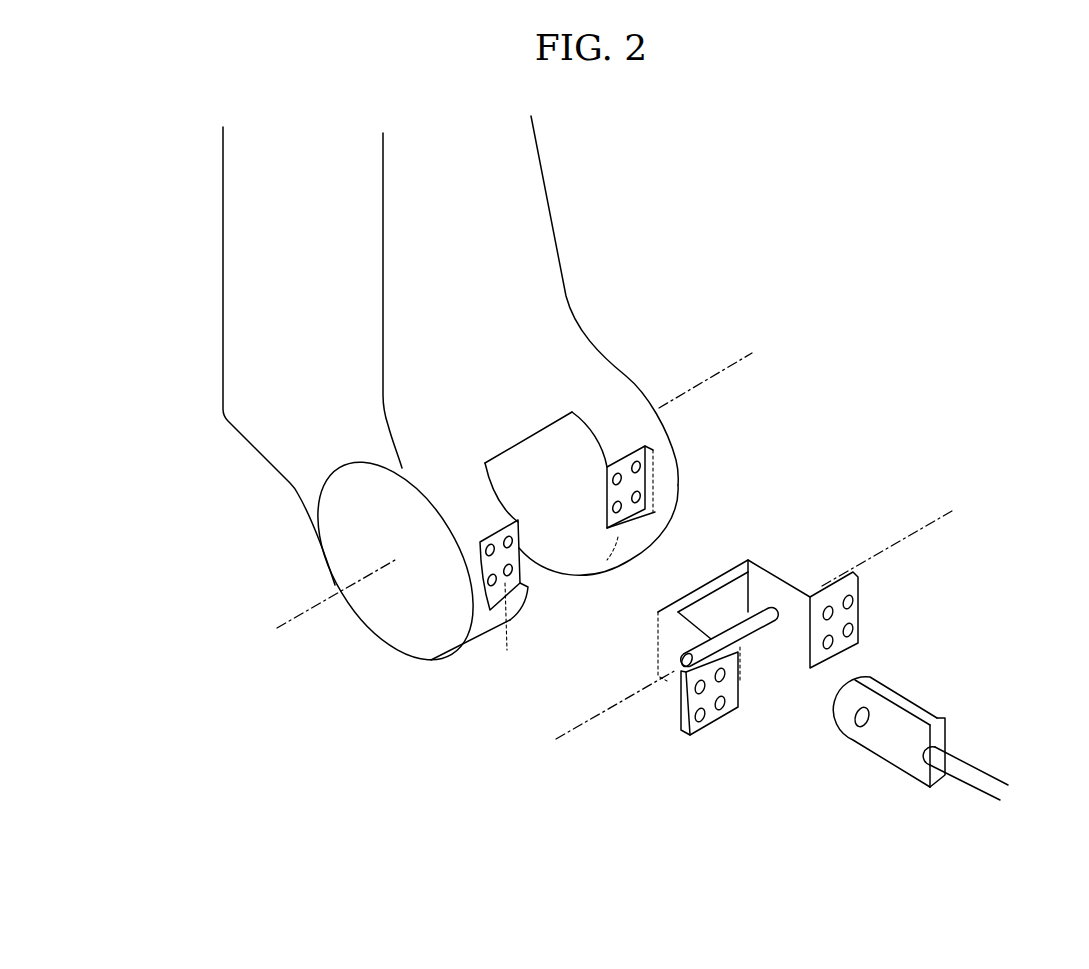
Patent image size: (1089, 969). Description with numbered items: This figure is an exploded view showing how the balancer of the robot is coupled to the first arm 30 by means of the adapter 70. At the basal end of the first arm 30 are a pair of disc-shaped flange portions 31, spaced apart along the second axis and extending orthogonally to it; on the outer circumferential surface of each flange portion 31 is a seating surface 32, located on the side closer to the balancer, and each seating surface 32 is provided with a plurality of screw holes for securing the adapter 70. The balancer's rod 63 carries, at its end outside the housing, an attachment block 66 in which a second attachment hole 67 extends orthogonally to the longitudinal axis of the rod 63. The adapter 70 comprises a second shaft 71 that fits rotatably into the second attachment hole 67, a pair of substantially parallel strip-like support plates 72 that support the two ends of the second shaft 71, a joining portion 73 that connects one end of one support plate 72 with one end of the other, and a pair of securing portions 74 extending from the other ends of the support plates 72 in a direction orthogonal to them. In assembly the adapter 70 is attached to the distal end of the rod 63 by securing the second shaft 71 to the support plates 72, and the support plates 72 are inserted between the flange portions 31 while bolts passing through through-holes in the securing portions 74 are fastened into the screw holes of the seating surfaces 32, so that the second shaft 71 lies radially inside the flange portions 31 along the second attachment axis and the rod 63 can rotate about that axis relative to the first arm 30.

The first arm 30 is at (208, 231).
The flange portions 31 is at (333, 579).
The seating surfaces 32 is at (634, 509).
The rod 63 is at (1000, 740).
The attachment block 66 is at (910, 778).
The second attachment hole 67 is at (858, 727).
The adapter 70 is at (796, 508).
The second shaft 71 is at (747, 643).
The support plates 72 is at (788, 582).
The joining portion 73 is at (690, 595).
The securing portions 74 is at (853, 618).